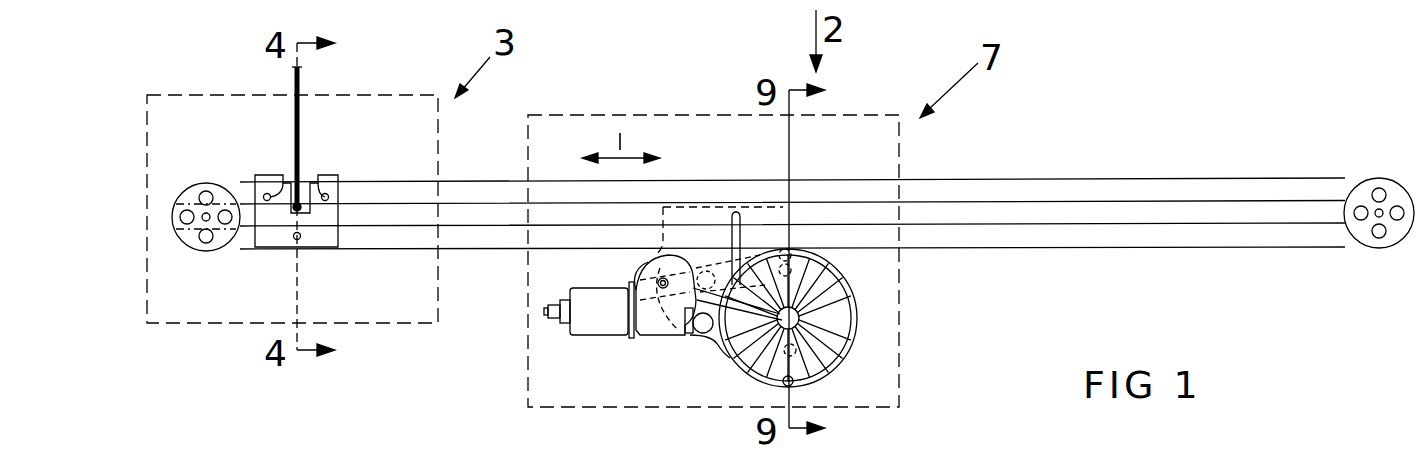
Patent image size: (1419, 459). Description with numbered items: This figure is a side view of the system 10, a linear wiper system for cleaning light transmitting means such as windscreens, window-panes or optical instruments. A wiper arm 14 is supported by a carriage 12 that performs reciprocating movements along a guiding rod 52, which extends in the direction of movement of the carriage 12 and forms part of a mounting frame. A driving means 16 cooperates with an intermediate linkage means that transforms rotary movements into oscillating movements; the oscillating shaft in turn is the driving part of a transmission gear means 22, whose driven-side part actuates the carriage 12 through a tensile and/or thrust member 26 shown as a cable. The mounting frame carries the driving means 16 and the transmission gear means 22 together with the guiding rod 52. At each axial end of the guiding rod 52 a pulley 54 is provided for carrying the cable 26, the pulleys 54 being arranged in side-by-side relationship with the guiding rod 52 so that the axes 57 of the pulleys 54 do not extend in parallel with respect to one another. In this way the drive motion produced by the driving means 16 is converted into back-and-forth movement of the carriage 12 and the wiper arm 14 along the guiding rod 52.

The system 10 is at (1064, 108).
The carriage 12 is at (356, 164).
The wiper arm 14 is at (300, 78).
The driving means 16 is at (568, 333).
The transmission gear means 22 is at (885, 305).
The tensile and/or thrust member 26 is at (1218, 178).
The guiding rod 52 is at (1258, 218).
The pulley 54 is at (186, 147).
The axes of the pulleys 57 is at (205, 217).